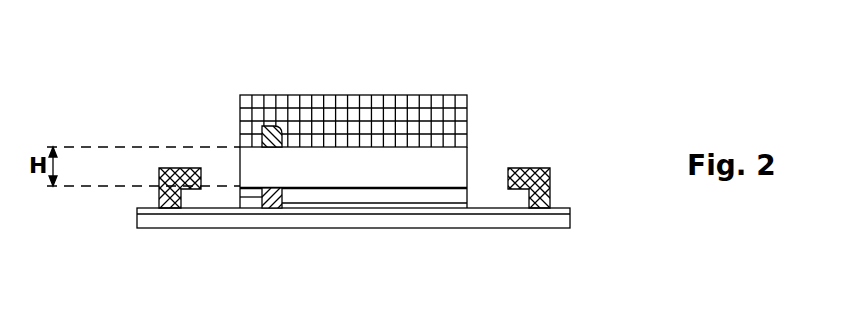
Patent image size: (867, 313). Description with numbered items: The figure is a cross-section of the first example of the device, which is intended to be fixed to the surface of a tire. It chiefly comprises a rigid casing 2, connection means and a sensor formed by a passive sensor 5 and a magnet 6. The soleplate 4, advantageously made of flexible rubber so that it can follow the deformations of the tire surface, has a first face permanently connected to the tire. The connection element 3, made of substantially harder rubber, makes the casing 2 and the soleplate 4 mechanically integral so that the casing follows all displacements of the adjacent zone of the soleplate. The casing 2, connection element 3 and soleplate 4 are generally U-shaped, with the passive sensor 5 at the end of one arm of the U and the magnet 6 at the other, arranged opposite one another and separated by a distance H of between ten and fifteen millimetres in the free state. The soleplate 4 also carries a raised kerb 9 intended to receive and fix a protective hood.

The rigid casing 2 is at (345, 122).
The connection element 3 is at (440, 170).
The soleplate 4 is at (558, 221).
The passive sensor 5 is at (262, 130).
The magnet 6 is at (275, 200).
The raised kerb 9 is at (550, 172).